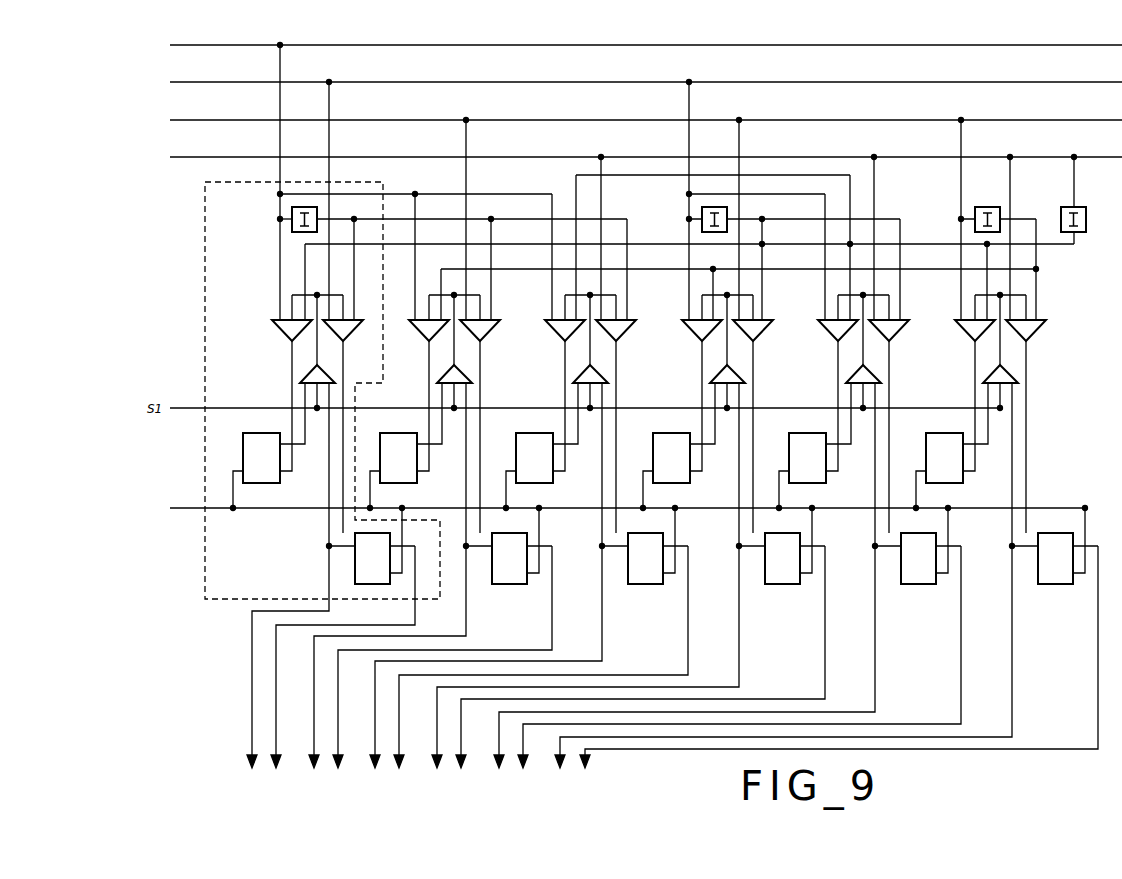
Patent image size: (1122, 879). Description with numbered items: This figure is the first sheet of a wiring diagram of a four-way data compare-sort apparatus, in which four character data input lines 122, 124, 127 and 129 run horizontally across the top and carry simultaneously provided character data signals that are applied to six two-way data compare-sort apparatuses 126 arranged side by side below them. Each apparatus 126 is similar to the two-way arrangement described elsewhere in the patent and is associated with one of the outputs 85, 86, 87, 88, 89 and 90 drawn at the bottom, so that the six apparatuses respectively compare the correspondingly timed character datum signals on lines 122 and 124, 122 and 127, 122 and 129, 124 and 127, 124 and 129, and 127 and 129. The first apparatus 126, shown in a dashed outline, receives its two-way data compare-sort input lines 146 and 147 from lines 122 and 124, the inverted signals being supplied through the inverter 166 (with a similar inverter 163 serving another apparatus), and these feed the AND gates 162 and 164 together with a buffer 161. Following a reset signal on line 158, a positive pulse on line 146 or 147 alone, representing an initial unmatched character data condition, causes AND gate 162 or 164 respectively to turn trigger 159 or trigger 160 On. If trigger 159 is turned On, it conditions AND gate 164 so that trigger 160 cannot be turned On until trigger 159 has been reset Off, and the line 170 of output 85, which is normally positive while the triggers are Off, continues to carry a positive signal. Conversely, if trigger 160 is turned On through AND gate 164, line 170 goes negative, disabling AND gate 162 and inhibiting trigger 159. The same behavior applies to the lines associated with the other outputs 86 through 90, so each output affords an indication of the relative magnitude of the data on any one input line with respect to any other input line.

The character data input line 122 is at (235, 48).
The character data input line 124 is at (235, 85).
The character data input line 127 is at (235, 123).
The character data input line 129 is at (239, 160).
The two-way data compare-sort input line 146 is at (280, 168).
The two-way data compare-sort input line 147 is at (329, 172).
The two-way data compare-sort apparatus 126 is at (205, 210).
The inverter 166 is at (292, 224).
The inverter 163 is at (702, 224).
The AND gate 162 is at (286, 328).
The AND gate 164 is at (346, 328).
The buffer 161 is at (317, 372).
The trigger 159 is at (249, 453).
The reset signal line 158 is at (310, 511).
The trigger 160 is at (362, 572).
The output line 170 is at (254, 665).
The output 85 is at (278, 785).
The output 86 is at (340, 785).
The output 87 is at (401, 785).
The output 88 is at (463, 785).
The output 89 is at (525, 785).
The output 90 is at (587, 785).